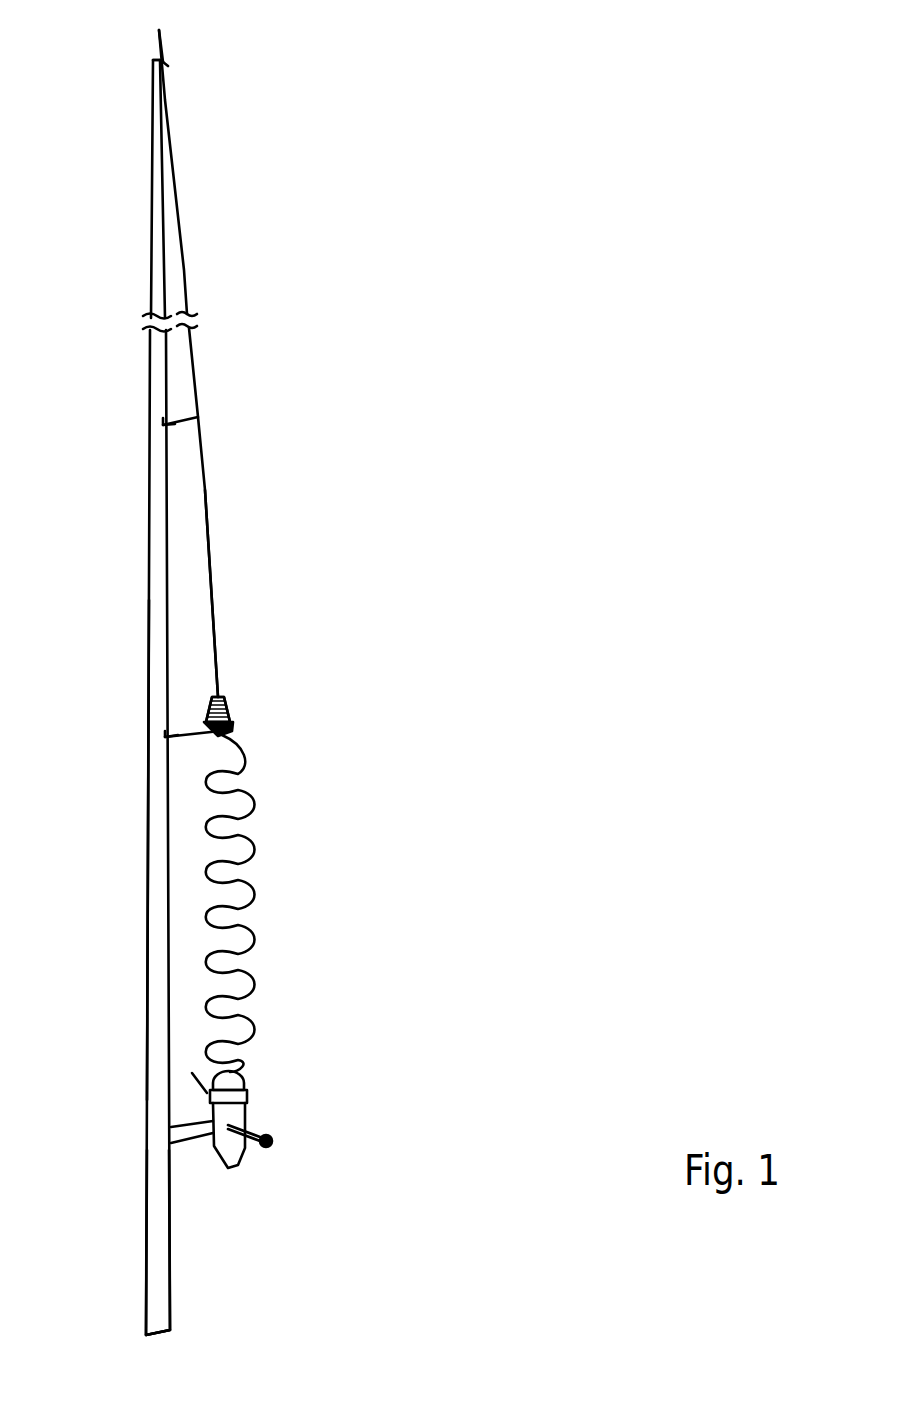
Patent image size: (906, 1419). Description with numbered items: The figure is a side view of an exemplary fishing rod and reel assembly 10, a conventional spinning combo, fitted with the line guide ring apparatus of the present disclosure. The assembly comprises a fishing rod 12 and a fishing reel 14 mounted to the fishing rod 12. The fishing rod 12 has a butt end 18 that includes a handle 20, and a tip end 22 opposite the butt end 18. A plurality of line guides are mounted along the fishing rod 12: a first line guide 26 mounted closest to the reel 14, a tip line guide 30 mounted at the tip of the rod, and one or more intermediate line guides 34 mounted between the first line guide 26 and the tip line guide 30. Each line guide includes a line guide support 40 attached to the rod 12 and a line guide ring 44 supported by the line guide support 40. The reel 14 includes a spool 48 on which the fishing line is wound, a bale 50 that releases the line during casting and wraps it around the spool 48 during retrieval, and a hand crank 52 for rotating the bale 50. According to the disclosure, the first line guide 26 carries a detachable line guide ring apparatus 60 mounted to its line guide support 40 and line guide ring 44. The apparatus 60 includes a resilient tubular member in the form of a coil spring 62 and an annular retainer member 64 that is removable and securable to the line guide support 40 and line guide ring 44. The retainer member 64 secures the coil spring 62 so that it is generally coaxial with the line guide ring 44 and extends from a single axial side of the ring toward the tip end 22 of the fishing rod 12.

The fishing rod and reel assembly 10 is at (138, 816).
The fishing rod 12 is at (156, 933).
The fishing reel 14 is at (233, 1153).
The butt end 18 is at (157, 1327).
The handle 20 is at (157, 1210).
The tip end 22 is at (152, 100).
The first line guide 26 is at (195, 730).
The tip line guide 30 is at (162, 60).
The intermediate line guide 34 is at (208, 414).
The line guide support 40 is at (163, 61).
The line guide ring 44 is at (164, 63).
The spool 48 is at (250, 1093).
The bale 50 is at (200, 1070).
The hand crank 52 is at (278, 1143).
The detachable line guide ring apparatus 60 is at (242, 698).
The coil spring 62 is at (230, 712).
The annular retainer member 64 is at (232, 725).